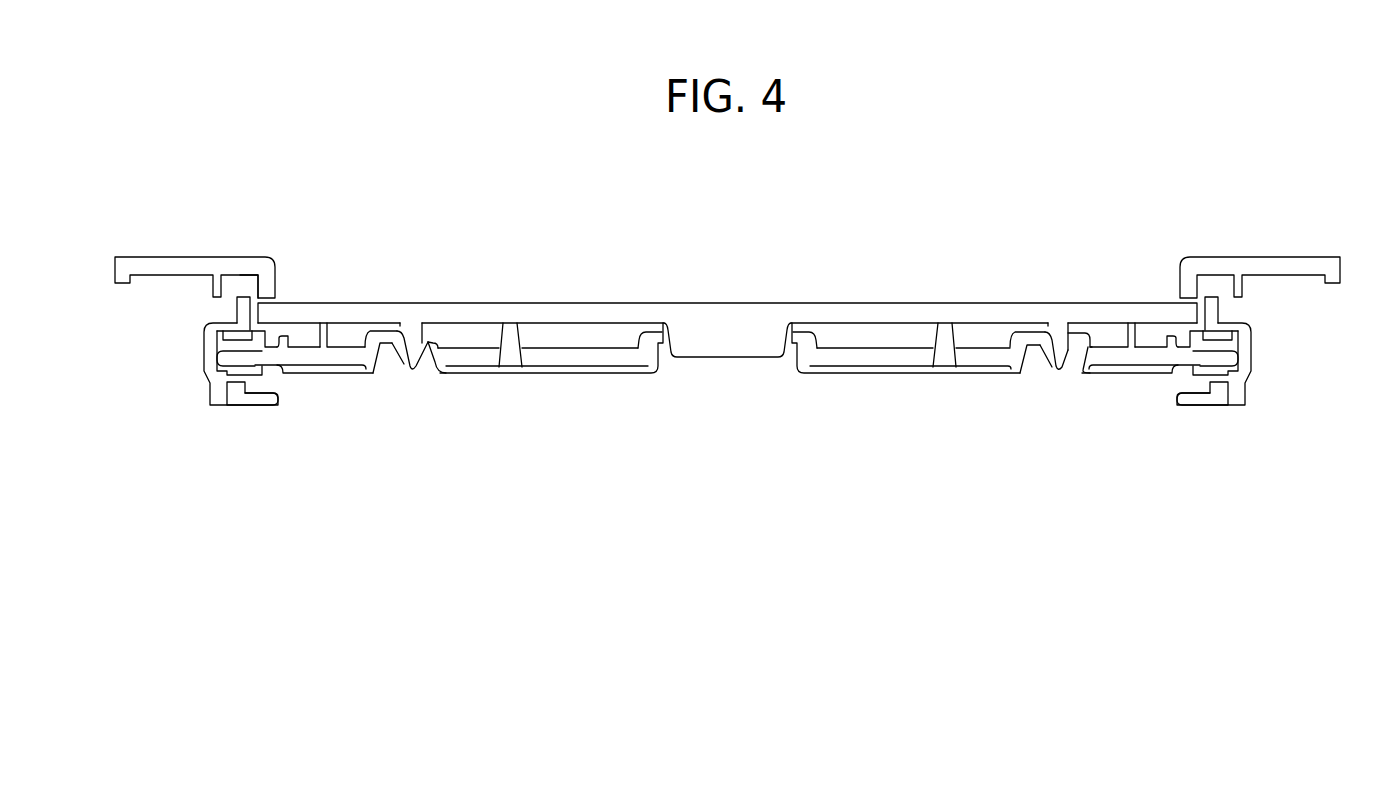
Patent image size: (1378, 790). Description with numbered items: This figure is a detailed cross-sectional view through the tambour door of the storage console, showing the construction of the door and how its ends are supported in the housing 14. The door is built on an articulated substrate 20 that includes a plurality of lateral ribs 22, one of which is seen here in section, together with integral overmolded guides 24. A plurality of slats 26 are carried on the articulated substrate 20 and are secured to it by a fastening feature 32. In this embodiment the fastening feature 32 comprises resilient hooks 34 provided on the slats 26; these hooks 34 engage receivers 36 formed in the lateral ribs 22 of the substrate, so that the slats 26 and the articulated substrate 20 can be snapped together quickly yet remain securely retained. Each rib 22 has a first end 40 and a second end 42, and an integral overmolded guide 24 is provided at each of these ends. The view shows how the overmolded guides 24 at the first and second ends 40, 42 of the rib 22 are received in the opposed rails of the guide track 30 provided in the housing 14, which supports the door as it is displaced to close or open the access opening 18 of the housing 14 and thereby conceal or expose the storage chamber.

The housing 14 is at (160, 256).
The access opening 18 is at (278, 282).
The articulated substrate 20 is at (829, 371).
The lateral ribs 22 is at (980, 357).
The integral overmolded guides 24 is at (190, 338).
The slats 26 is at (741, 303).
The guide track 30 is at (210, 355).
The fastening feature 32 is at (461, 292).
The resilient hooks 34 is at (418, 355).
The receivers 36 is at (418, 336).
The first end 40 is at (240, 358).
The second end 42 is at (1215, 358).